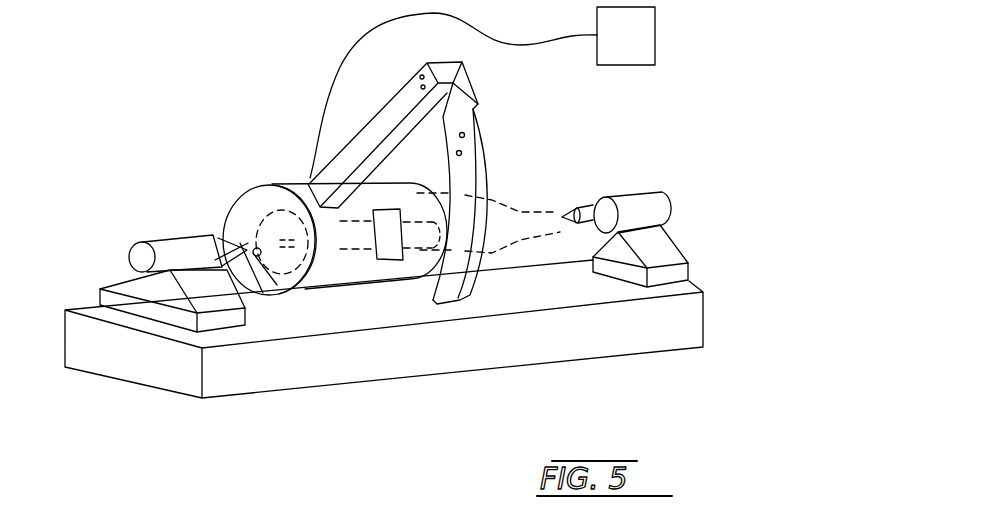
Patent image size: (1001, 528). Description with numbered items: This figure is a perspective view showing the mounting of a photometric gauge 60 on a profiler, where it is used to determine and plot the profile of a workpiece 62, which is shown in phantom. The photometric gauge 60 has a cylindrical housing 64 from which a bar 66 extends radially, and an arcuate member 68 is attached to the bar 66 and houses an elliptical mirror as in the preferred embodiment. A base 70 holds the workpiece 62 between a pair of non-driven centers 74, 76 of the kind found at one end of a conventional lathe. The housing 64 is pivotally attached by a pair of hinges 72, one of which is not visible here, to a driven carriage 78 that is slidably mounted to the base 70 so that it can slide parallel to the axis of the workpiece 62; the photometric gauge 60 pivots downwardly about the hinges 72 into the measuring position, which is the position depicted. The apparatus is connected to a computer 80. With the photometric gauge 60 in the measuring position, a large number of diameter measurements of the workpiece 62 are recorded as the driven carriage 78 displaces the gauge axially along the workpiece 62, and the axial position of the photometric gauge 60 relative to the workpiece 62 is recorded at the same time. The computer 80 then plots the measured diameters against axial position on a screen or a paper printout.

The photometric gauge 60 is at (275, 152).
The workpiece 62 is at (553, 210).
The cylindrical housing 64 is at (256, 192).
The bar 66 is at (397, 93).
The arcuate member 68 is at (492, 165).
The base 70 is at (697, 318).
The hinges 72 is at (248, 243).
The non-driven center 74 is at (645, 186).
The non-driven center 76 is at (232, 241).
The driven carriage 78 is at (266, 275).
The computer 80 is at (482, 92).